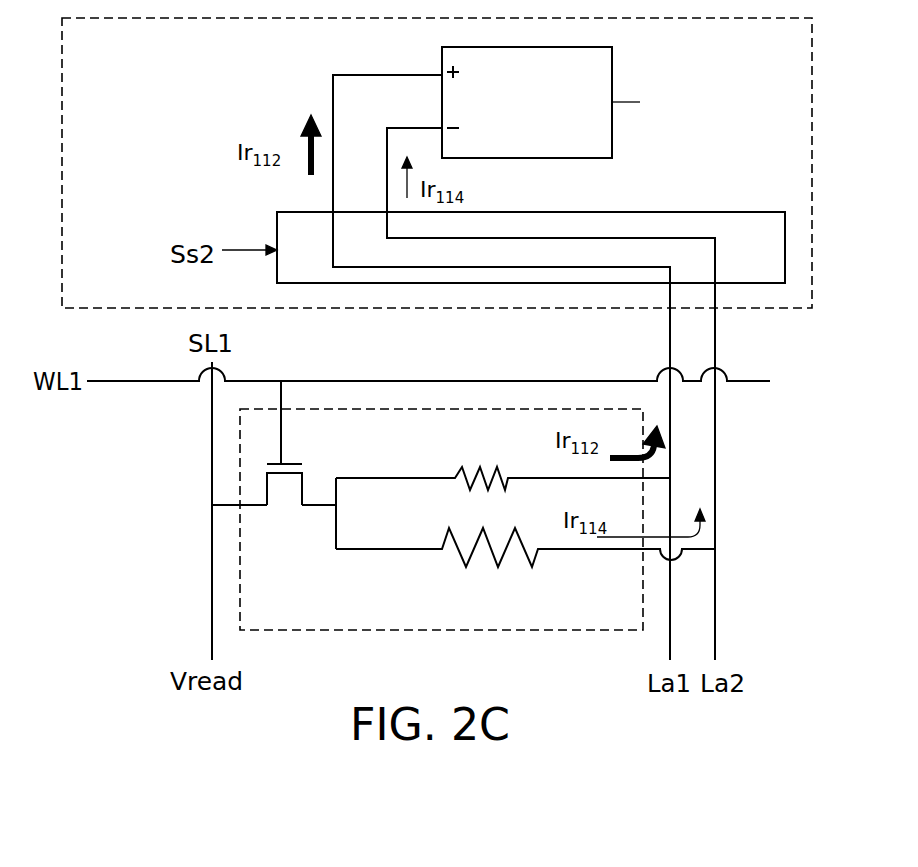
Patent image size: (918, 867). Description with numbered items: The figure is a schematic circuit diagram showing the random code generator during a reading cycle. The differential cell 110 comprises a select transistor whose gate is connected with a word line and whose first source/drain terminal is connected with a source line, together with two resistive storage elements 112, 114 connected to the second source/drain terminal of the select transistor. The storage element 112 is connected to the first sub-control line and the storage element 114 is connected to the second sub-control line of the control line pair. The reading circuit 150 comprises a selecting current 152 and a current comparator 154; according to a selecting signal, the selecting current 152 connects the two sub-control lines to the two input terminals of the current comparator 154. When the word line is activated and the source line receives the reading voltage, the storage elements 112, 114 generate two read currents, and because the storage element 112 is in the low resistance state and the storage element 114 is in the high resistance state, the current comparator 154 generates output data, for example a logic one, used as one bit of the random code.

The differential cell 110 is at (298, 614).
The storage element 112 is at (503, 464).
The storage element 114 is at (525, 568).
The reading circuit 150 is at (176, 104).
The selecting current 152 is at (696, 212).
The current comparator 154 is at (586, 149).